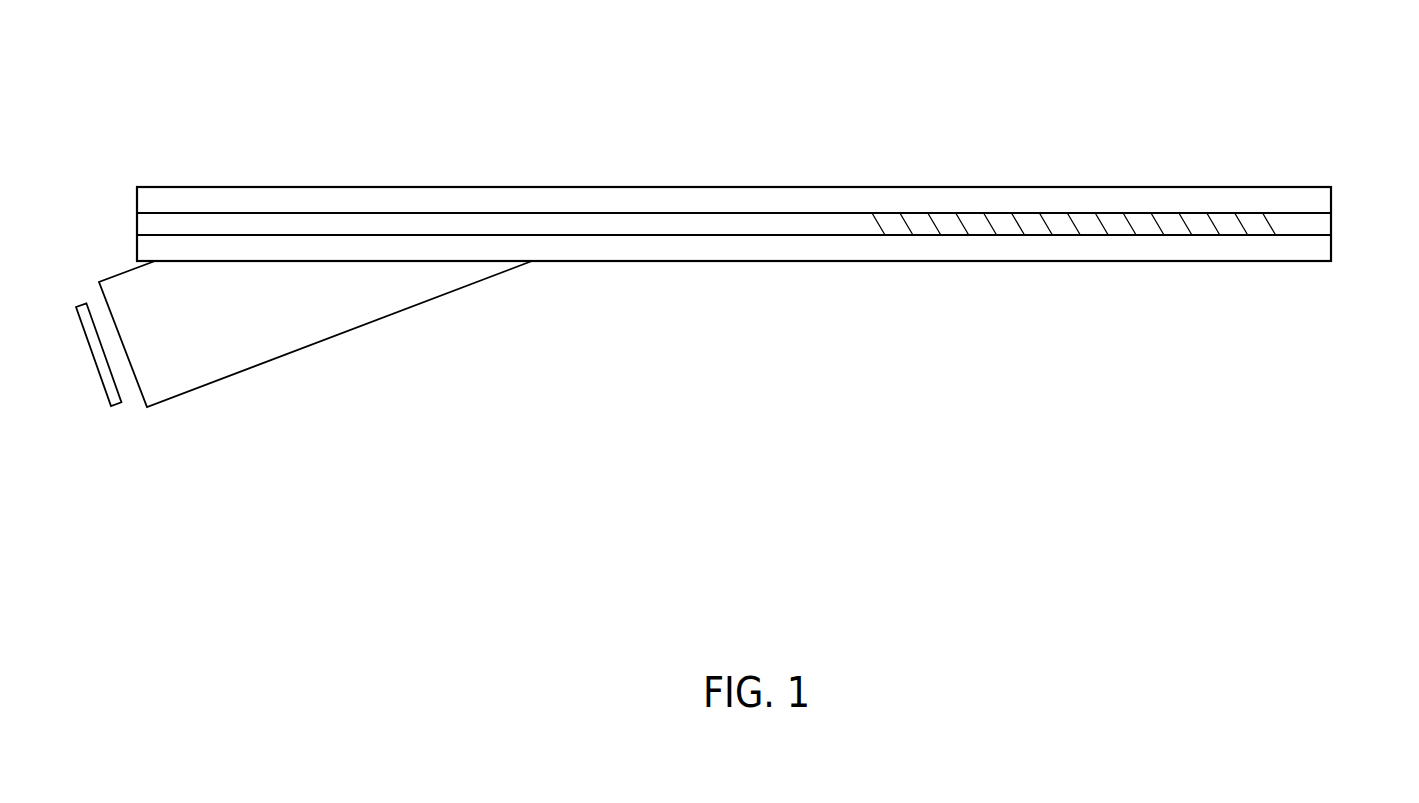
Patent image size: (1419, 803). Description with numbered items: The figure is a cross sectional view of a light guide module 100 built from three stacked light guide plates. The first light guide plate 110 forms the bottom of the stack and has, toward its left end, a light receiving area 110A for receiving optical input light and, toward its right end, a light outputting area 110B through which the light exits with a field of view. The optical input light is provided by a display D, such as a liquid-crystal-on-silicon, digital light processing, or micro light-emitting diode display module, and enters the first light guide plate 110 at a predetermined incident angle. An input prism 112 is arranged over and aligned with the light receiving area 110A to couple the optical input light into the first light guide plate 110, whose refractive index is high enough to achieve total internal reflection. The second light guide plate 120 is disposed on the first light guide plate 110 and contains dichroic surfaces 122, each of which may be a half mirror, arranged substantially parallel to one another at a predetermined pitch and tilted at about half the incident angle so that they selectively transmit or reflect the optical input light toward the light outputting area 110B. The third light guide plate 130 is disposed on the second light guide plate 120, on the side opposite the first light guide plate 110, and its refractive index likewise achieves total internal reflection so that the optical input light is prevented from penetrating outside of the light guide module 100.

The light guide module 100 is at (130, 63).
The first light guide plate 110 is at (1322, 249).
The light receiving area 110A is at (535, 263).
The light outputting area 110B is at (1278, 276).
The input prism 112 is at (203, 360).
The second light guide plate 120 is at (1322, 224).
The dichroic surfaces 122 is at (1273, 222).
The third light guide plate 130 is at (1322, 200).
The display D is at (117, 408).